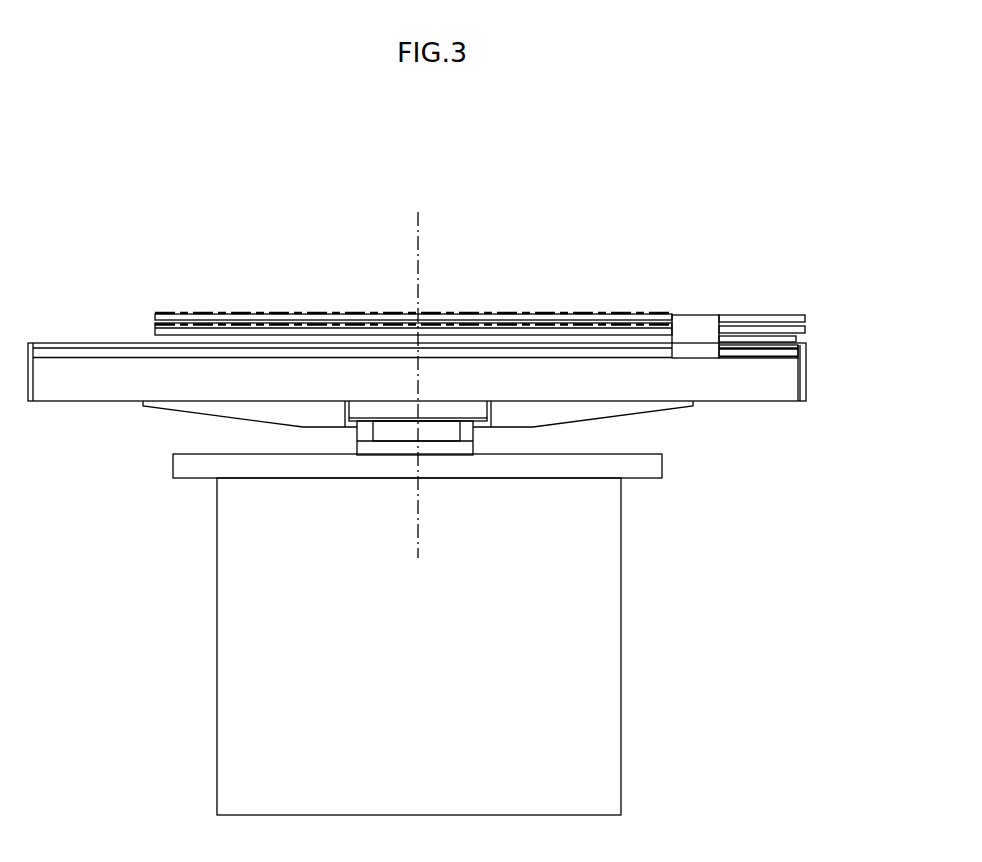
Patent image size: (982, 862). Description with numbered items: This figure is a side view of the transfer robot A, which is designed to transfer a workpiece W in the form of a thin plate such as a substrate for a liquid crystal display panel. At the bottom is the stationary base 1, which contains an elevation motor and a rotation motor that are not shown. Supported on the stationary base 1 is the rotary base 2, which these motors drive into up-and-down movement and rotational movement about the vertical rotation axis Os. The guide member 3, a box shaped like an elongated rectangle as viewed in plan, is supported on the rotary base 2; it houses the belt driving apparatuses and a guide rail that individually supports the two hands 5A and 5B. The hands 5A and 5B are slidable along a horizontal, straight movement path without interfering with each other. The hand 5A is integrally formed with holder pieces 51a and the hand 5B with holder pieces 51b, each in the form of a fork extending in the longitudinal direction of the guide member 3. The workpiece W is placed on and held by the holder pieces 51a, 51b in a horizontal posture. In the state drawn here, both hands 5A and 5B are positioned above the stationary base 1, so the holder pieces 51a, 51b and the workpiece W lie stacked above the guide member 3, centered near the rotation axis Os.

The vertical rotation axis Os is at (418, 243).
The guide member 3 is at (785, 403).
The rotary base 2 is at (450, 428).
The workpiece W is at (413, 298).
The holder pieces 51a is at (270, 334).
The holder pieces 51b is at (210, 317).
The hand 5B is at (808, 312).
The hand 5A is at (809, 330).
The transfer robot A is at (449, 634).
The stationary base 1 is at (621, 625).